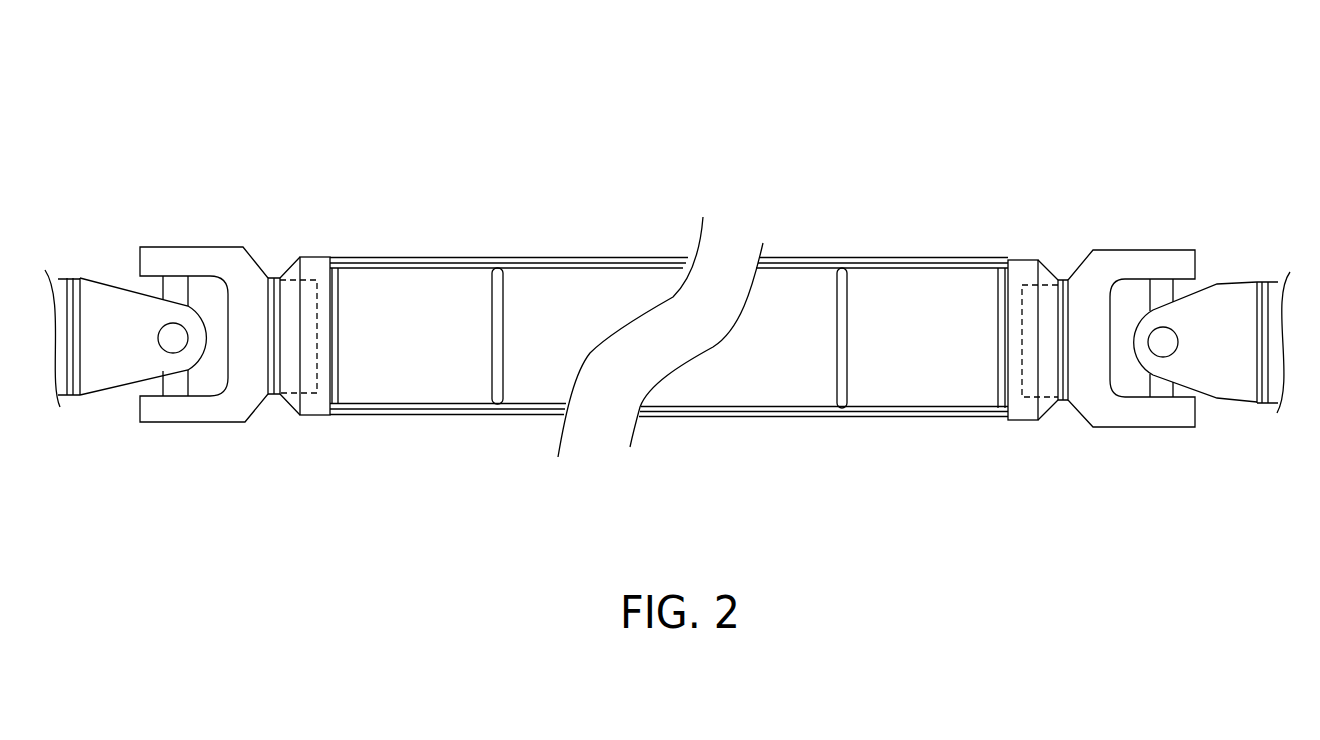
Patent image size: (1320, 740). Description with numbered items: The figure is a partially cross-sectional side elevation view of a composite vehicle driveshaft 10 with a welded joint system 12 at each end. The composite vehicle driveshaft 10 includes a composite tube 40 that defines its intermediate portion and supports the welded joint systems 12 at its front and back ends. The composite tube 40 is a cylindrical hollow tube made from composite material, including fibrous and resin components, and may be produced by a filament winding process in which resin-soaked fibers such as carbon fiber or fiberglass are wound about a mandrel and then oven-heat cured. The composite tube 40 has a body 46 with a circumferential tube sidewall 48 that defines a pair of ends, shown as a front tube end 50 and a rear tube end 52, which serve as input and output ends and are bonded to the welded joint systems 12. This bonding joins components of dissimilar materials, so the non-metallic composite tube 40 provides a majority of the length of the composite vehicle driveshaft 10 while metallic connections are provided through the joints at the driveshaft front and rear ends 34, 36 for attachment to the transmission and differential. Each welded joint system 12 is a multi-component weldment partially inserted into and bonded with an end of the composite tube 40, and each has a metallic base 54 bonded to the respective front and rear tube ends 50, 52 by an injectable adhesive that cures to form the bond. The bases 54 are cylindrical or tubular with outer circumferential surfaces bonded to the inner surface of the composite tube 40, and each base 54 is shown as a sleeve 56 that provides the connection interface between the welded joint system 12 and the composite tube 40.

The composite vehicle driveshaft 10 is at (672, 100).
The welded joint system 12 is at (224, 147).
The driveshaft front end 34 is at (238, 443).
The driveshaft rear end 36 is at (1050, 443).
The composite tube 40 is at (714, 197).
The body 46 is at (614, 203).
The circumferential tube sidewall 48 is at (798, 256).
The front tube end 50 is at (334, 150).
The rear tube end 52 is at (978, 187).
The base 54 is at (438, 425).
The sleeve 56 is at (430, 257).